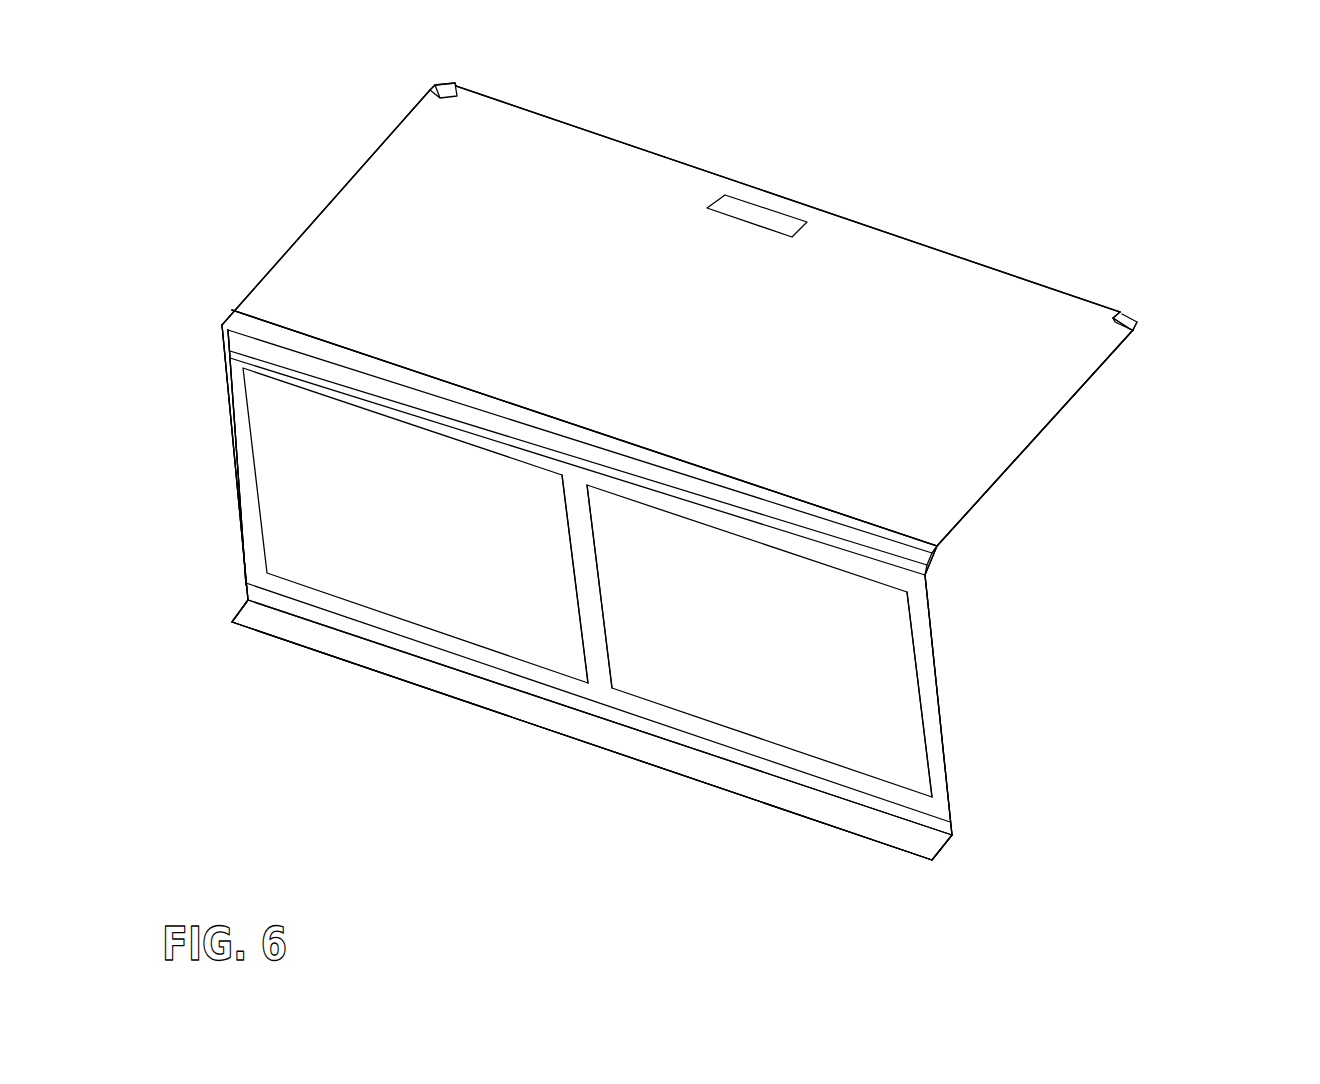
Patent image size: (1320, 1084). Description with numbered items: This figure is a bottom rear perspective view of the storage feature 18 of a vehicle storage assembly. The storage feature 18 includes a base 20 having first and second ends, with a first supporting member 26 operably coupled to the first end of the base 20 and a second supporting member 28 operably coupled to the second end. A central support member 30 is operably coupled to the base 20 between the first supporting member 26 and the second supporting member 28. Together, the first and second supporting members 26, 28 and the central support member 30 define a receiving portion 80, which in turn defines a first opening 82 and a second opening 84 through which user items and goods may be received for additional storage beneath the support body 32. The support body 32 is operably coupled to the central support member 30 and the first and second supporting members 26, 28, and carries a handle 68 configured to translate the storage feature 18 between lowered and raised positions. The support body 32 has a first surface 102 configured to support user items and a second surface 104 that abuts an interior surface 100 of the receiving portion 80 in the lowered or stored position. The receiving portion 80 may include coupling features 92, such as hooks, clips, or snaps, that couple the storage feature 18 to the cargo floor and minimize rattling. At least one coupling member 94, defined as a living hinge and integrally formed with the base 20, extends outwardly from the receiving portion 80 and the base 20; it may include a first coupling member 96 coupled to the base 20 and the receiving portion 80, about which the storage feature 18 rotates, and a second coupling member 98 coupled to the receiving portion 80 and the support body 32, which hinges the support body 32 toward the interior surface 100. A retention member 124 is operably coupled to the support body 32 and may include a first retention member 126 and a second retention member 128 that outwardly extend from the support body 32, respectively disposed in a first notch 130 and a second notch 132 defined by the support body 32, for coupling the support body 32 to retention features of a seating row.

The storage feature 18 is at (1180, 281).
The base 20 is at (595, 690).
The first supporting member 26 is at (250, 495).
The second supporting member 28 is at (935, 675).
The central support member 30 is at (590, 612).
The support body 32 is at (400, 238).
The handle 68 is at (757, 203).
The receiving portion 80 is at (935, 722).
The first opening 82 is at (447, 569).
The second opening 84 is at (752, 658).
The coupling features 92 is at (228, 334).
The coupling member 94 is at (952, 836).
The first coupling member 96 is at (851, 820).
The second coupling member 98 is at (938, 548).
The interior surface 100 is at (240, 425).
The first surface 102 is at (905, 410).
The second surface 104 is at (870, 478).
The retention member 124 is at (1126, 309).
The first retention member 126 is at (452, 84).
The second retention member 128 is at (1136, 318).
The first notch 130 is at (430, 88).
The second notch 132 is at (1137, 328).